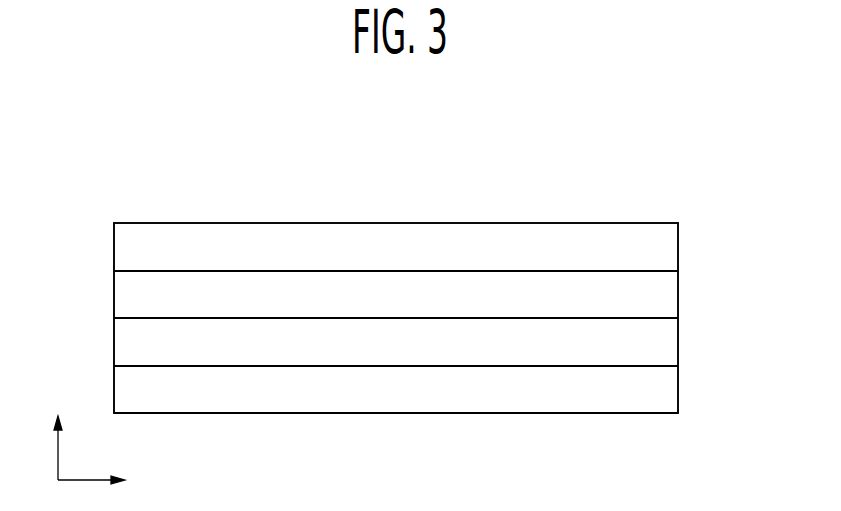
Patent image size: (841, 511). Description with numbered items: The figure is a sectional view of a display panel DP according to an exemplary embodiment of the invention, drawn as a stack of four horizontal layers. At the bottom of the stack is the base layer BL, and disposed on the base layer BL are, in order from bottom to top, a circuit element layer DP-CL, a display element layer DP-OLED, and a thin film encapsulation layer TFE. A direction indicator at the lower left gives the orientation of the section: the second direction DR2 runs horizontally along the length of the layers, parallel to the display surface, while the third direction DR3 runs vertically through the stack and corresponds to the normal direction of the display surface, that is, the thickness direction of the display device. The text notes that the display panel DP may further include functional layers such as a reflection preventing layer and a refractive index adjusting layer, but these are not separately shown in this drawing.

The display panel DP is at (689, 161).
The thin film encapsulation layer TFE is at (672, 248).
The display element layer DP-OLED is at (672, 295).
The circuit element layer DP-CL is at (672, 343).
The base layer BL is at (672, 391).
The second direction DR2 is at (112, 480).
The third direction DR3 is at (60, 431).